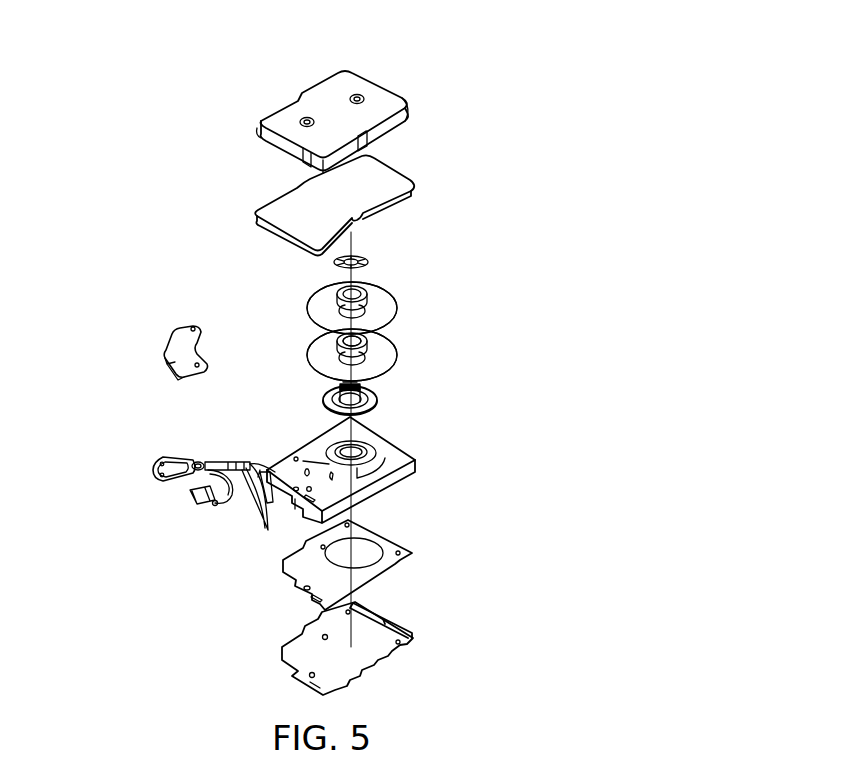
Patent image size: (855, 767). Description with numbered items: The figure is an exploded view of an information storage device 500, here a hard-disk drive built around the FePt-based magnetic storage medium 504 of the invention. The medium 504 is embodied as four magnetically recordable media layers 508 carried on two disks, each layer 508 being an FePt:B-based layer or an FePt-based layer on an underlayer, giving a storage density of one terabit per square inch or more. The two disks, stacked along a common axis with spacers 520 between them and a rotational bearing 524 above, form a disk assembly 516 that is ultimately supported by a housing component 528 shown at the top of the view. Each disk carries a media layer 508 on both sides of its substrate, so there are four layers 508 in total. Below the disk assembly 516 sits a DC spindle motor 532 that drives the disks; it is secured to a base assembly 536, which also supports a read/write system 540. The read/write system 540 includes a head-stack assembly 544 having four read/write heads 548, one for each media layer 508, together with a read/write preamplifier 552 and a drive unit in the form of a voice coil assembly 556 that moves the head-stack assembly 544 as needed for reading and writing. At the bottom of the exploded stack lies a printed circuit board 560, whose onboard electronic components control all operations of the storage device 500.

The information storage device 500 is at (439, 68).
The housing component 528 is at (382, 100).
The rotational bearing 524 is at (368, 260).
The spacers 520 is at (329, 301).
The magnetic storage medium 504 is at (320, 332).
The magnetically recordable media layers 508 is at (323, 378).
The disk assembly 516 is at (382, 263).
The DC spindle motor 532 is at (378, 400).
The base assembly 536 is at (415, 455).
The read/write system 540 is at (66, 365).
The head-stack assembly 544 is at (243, 463).
The read/write heads 548 is at (250, 464).
The read/write preamplifier 552 is at (210, 463).
The voice coil assembly 556 is at (172, 341).
The printed circuit board 560 is at (407, 636).